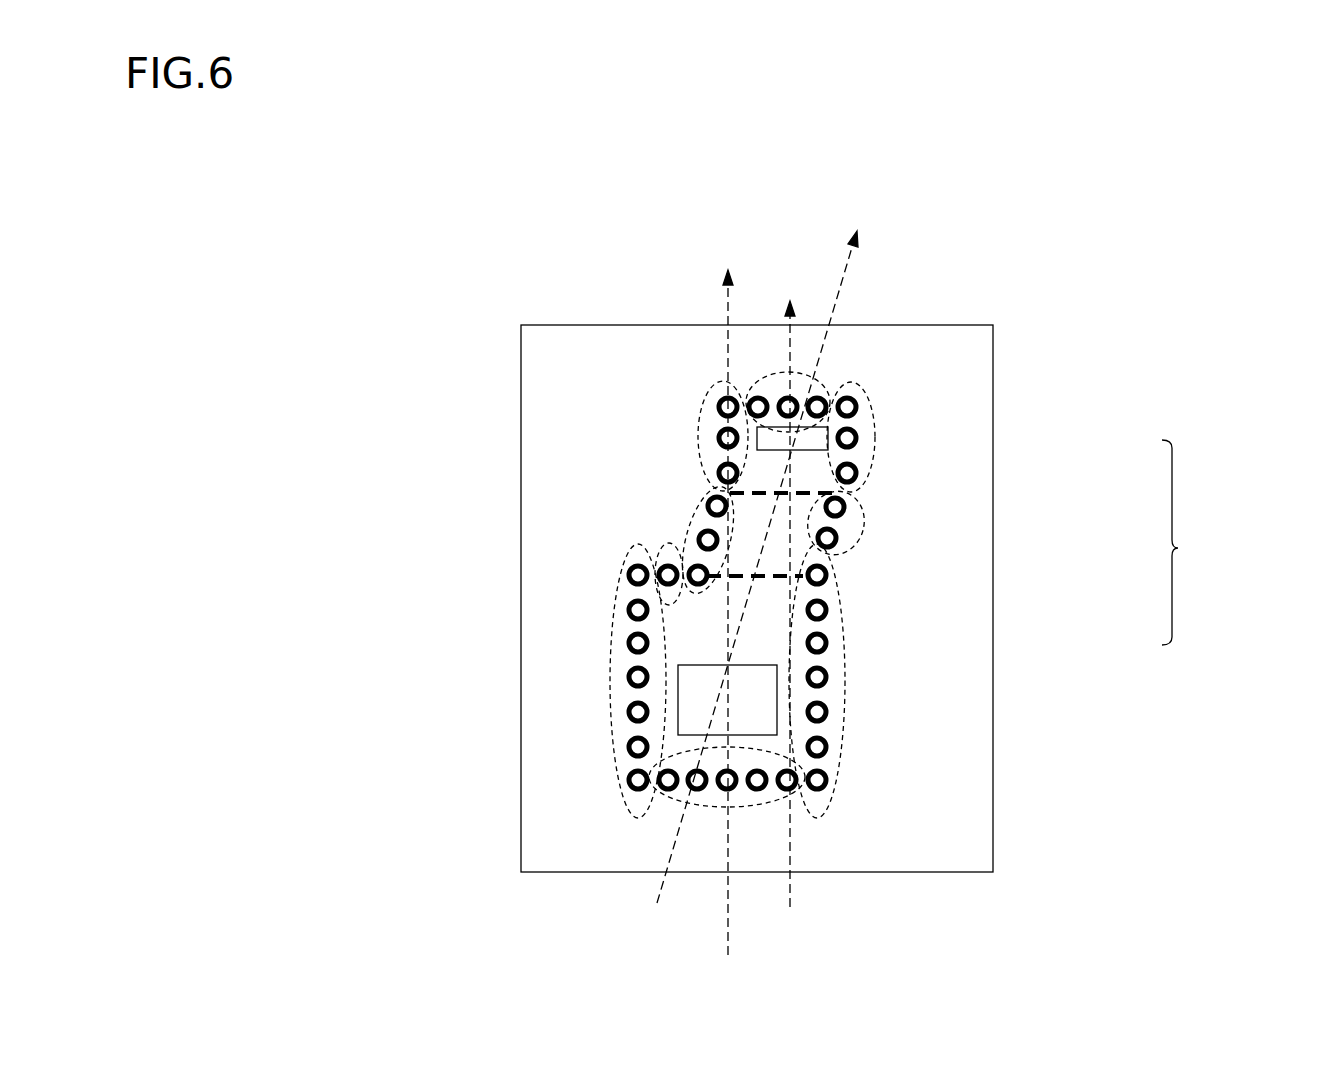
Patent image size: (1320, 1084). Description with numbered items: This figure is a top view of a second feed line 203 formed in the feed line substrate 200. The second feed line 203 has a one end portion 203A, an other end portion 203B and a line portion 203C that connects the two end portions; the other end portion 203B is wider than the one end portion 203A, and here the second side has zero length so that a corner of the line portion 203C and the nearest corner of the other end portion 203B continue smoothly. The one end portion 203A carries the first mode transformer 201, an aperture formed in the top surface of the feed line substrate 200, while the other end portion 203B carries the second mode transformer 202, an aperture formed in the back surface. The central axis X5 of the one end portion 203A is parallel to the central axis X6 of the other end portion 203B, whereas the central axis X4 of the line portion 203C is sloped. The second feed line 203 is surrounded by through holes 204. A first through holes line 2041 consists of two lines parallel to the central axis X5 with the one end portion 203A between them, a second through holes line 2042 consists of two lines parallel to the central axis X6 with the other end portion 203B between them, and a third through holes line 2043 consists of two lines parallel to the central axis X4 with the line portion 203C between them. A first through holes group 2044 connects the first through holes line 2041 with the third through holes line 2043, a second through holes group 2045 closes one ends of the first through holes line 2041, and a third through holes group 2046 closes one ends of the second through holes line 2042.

The feed line substrate 200 is at (598, 324).
The first mode transformer 201 is at (802, 440).
The second mode transformer 202 is at (902, 721).
The second feed line 203 is at (748, 556).
The one end portion 203A is at (749, 322).
The other end portion 203B is at (678, 751).
The line portion 203C is at (701, 523).
The through holes 204 is at (826, 672).
The first through holes line 2041 is at (720, 480).
The second through holes line 2042 is at (790, 728).
The third through holes line 2043 is at (803, 528).
The first through holes group 2044 is at (655, 555).
The second through holes group 2045 is at (752, 385).
The third through holes group 2046 is at (750, 800).
The central axis X4 is at (779, 548).
The central axis X5 is at (808, 591).
The central axis X6 is at (709, 599).